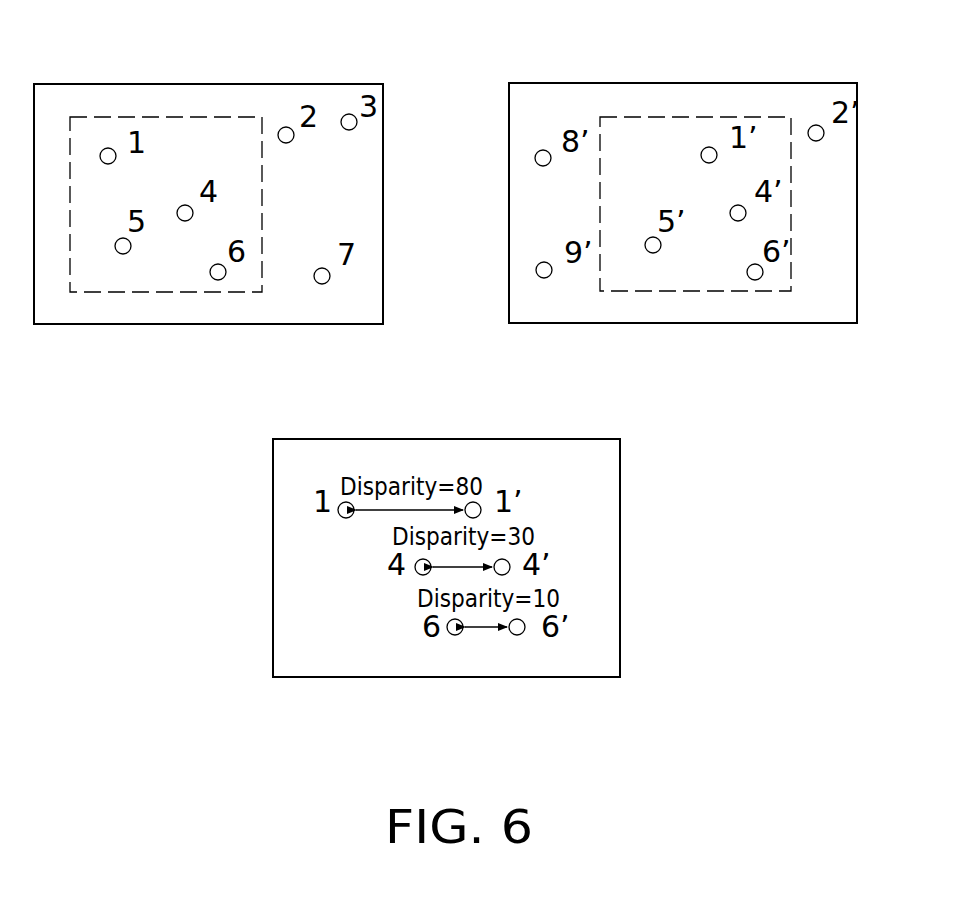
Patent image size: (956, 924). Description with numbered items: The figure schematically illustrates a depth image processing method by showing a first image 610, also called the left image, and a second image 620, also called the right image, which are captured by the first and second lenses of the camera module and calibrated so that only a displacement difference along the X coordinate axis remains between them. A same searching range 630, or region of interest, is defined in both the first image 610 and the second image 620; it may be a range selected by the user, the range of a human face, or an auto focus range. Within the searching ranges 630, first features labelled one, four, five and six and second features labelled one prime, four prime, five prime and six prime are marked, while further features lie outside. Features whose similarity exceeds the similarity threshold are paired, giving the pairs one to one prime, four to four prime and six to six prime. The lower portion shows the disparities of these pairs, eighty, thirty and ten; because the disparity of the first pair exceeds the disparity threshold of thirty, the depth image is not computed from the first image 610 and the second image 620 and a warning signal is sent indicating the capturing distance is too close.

The first image 610 is at (322, 82).
The second image 620 is at (796, 82).
The searching range 630 is at (185, 117).